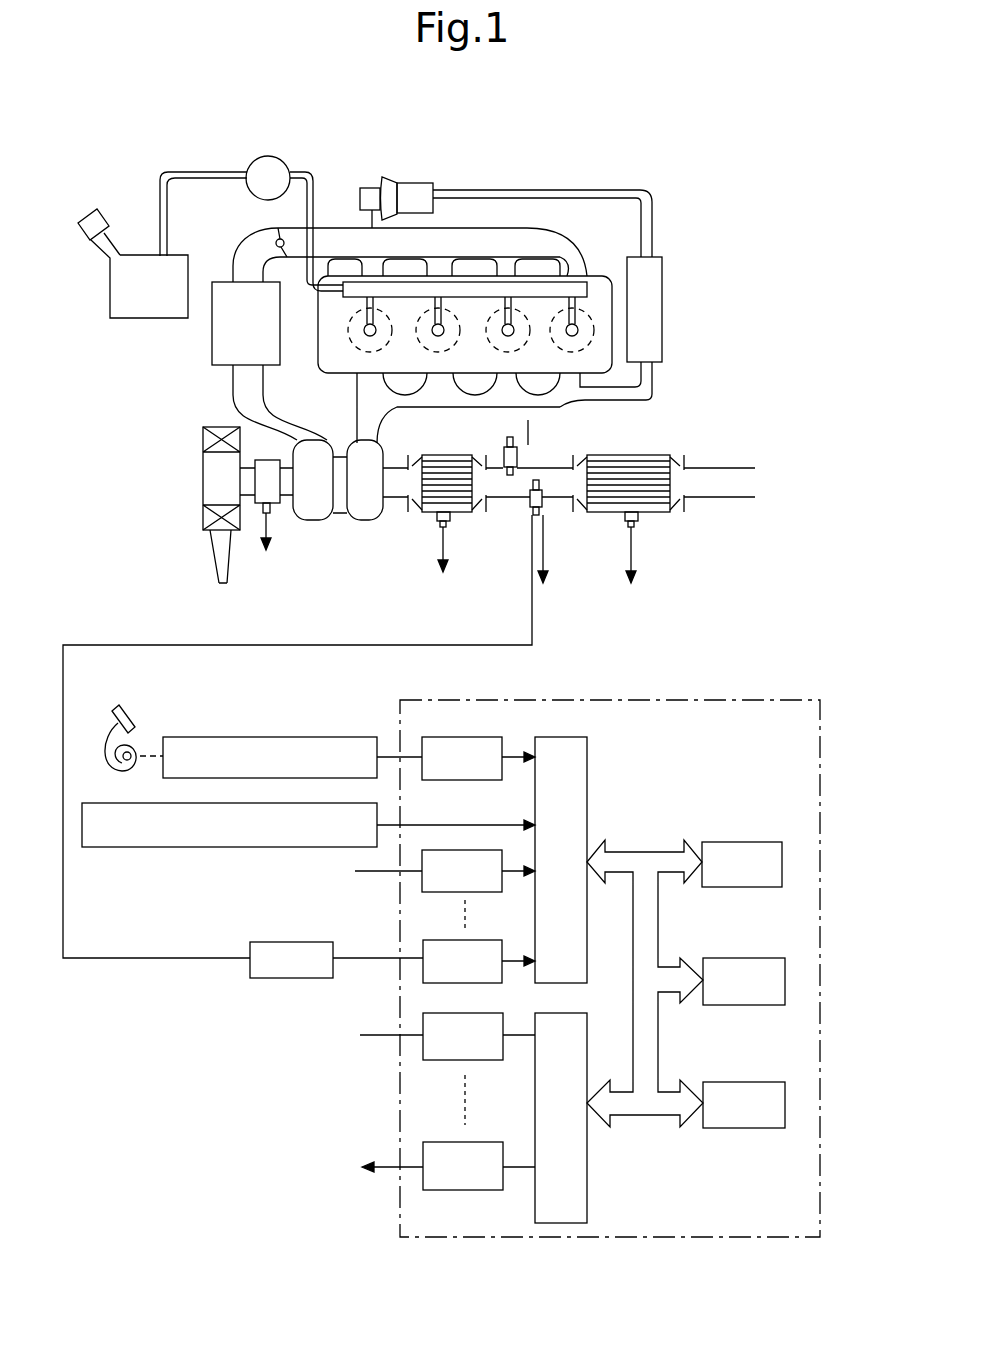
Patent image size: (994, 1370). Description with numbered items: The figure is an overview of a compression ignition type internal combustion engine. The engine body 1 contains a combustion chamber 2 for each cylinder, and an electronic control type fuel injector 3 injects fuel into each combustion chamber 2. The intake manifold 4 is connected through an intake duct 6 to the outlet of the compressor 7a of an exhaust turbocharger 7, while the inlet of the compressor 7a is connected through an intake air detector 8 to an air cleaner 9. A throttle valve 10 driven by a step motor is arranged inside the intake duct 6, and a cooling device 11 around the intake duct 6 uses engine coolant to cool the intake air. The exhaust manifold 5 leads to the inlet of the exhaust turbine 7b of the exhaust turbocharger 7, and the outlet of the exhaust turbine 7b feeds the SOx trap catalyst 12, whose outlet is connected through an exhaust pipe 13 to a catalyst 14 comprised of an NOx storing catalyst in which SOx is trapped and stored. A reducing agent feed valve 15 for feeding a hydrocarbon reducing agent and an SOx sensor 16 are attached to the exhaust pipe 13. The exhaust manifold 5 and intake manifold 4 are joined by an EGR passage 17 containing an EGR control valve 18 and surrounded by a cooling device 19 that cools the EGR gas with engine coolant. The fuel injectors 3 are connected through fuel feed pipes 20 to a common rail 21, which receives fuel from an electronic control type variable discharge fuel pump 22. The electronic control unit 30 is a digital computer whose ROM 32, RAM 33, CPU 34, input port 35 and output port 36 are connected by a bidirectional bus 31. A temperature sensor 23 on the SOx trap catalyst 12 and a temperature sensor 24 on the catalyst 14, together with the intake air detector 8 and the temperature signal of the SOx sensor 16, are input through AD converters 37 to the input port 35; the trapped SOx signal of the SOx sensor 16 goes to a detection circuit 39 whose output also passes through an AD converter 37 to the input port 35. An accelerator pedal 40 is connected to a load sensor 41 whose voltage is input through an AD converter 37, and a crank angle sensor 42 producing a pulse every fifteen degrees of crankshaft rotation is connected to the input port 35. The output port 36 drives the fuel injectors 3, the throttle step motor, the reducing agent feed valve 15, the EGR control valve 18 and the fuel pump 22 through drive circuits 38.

The engine body 1 is at (612, 268).
The combustion chamber 2 is at (357, 350).
The fuel injector 3 is at (362, 333).
The intake manifold 4 is at (553, 245).
The exhaust manifold 5 is at (460, 400).
The intake duct 6 is at (240, 259).
The exhaust turbocharger 7 is at (340, 527).
The compressor 7a is at (313, 514).
The exhaust turbine 7b is at (369, 514).
The intake air detector 8 is at (276, 506).
The air cleaner 9 is at (214, 490).
The throttle valve 10 is at (276, 240).
The cooling device 11 is at (220, 349).
The SOx trap catalyst 12 is at (457, 505).
The exhaust pipe 13 is at (515, 499).
The catalyst 14 is at (645, 475).
The reducing agent feed valve 15 is at (524, 454).
The SOx sensor 16 is at (541, 512).
The EGR passage 17 is at (526, 196).
The EGR control valve 18 is at (372, 188).
The cooling device 19 is at (663, 307).
The fuel feed pipe 20 is at (364, 322).
The common rail 21 is at (480, 292).
The fuel pump 22 is at (259, 158).
The temperature sensor 23 is at (438, 522).
The temperature sensor 24 is at (640, 522).
The electronic control unit 30 is at (835, 738).
The bidirectional bus 31 is at (645, 851).
The ROM 32 is at (742, 842).
The RAM 33 is at (742, 958).
The CPU 34 is at (742, 1082).
The input port 35 is at (570, 737).
The output port 36 is at (590, 1170).
The AD converter 37 is at (464, 737).
The drive circuit 38 is at (423, 1150).
The detection circuit 39 is at (291, 978).
The accelerator pedal 40 is at (128, 712).
The load sensor 41 is at (320, 737).
The crank angle sensor 42 is at (238, 848).